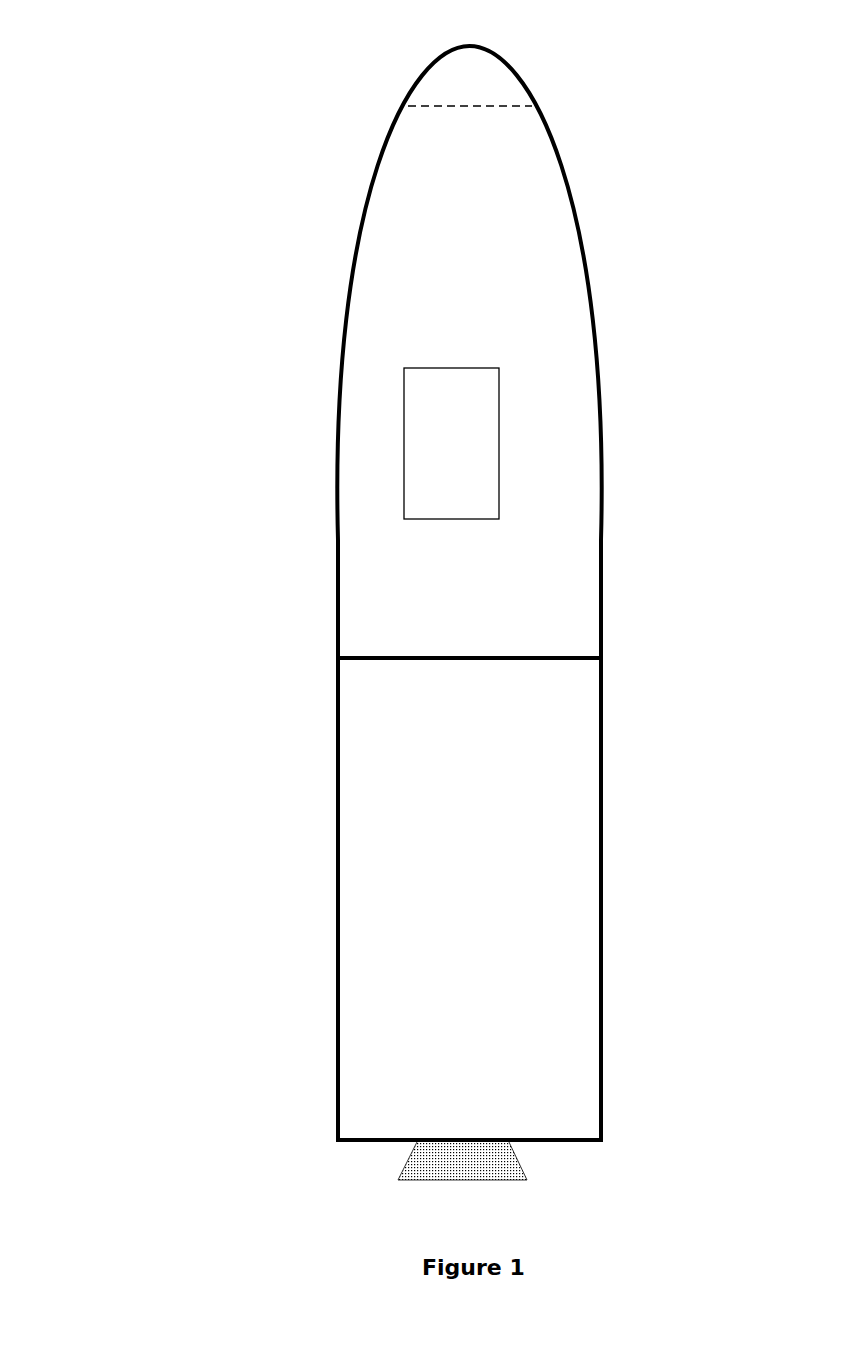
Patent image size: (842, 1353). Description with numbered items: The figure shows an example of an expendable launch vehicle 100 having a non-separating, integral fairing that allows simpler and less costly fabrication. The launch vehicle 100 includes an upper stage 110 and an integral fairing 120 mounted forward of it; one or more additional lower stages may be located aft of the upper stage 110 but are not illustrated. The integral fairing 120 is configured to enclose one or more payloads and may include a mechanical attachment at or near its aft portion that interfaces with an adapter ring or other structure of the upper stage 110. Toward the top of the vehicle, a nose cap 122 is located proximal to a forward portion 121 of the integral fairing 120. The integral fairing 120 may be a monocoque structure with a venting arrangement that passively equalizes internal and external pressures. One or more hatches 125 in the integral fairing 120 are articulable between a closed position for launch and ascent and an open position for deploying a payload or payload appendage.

The expendable launch vehicle 100 is at (182, 76).
The upper stage 110 is at (602, 777).
The integral fairing 120 is at (593, 293).
The forward portion 121 is at (608, 41).
The nose cap 122 is at (442, 80).
The hatches 125 is at (487, 442).